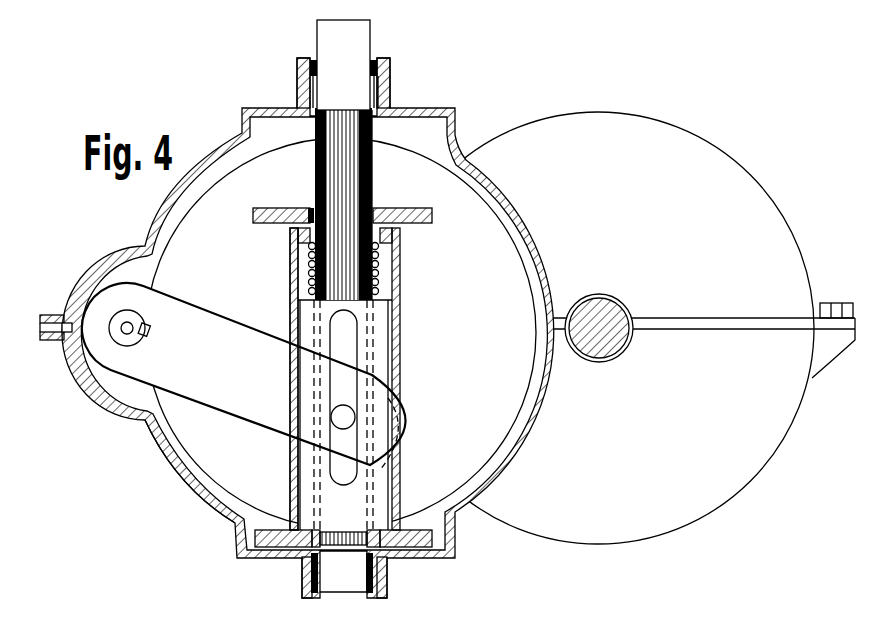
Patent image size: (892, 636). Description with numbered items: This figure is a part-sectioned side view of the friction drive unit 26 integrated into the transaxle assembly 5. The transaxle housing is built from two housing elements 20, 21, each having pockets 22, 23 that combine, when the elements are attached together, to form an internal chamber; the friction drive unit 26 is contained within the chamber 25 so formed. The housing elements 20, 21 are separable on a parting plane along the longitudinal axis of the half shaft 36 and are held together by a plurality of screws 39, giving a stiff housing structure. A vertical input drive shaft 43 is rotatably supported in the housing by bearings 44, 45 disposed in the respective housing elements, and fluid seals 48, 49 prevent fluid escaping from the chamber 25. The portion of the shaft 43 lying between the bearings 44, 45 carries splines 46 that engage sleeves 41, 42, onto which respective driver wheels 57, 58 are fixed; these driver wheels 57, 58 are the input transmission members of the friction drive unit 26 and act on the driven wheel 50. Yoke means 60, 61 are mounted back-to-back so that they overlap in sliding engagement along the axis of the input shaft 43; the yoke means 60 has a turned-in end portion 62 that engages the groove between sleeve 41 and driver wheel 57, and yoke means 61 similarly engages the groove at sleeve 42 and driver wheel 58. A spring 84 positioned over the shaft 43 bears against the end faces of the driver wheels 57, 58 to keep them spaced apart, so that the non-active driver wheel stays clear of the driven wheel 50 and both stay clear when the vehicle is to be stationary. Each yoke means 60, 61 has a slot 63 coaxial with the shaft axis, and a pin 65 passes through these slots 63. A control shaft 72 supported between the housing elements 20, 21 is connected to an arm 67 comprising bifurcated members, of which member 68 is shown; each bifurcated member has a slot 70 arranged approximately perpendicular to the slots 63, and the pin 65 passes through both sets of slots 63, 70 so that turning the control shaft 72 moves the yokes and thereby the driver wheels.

The transaxle assembly 5 is at (606, 45).
The housing element 20 is at (48, 313).
The housing element 21 is at (62, 332).
The pocket 22 is at (211, 167).
The pocket 23 is at (178, 449).
The chamber 25 is at (434, 137).
The friction drive unit 26 is at (118, 455).
The half shaft 36 is at (593, 305).
The screw 39 is at (838, 303).
The sleeve 41 is at (307, 212).
The sleeve 42 is at (317, 532).
The input drive shaft 43 is at (327, 54).
The bearing 44 is at (378, 100).
The bearing 45 is at (310, 573).
The splines 46 is at (373, 177).
The fluid seal 48 is at (383, 64).
The fluid seal 49 is at (378, 598).
The driven wheel 50 is at (186, 257).
The driver wheel 57 is at (424, 222).
The driver wheel 58 is at (421, 557).
The yoke means 60 is at (290, 272).
The yoke means 61 is at (381, 362).
The turned-in end portion 62 is at (293, 232).
The slot 63 is at (354, 337).
The pin 65 is at (331, 412).
The arm 67 is at (117, 302).
The bifurcated member 68 is at (250, 375).
The slot 70 is at (397, 420).
The control shaft 72 is at (120, 332).
The spring 84 is at (379, 278).